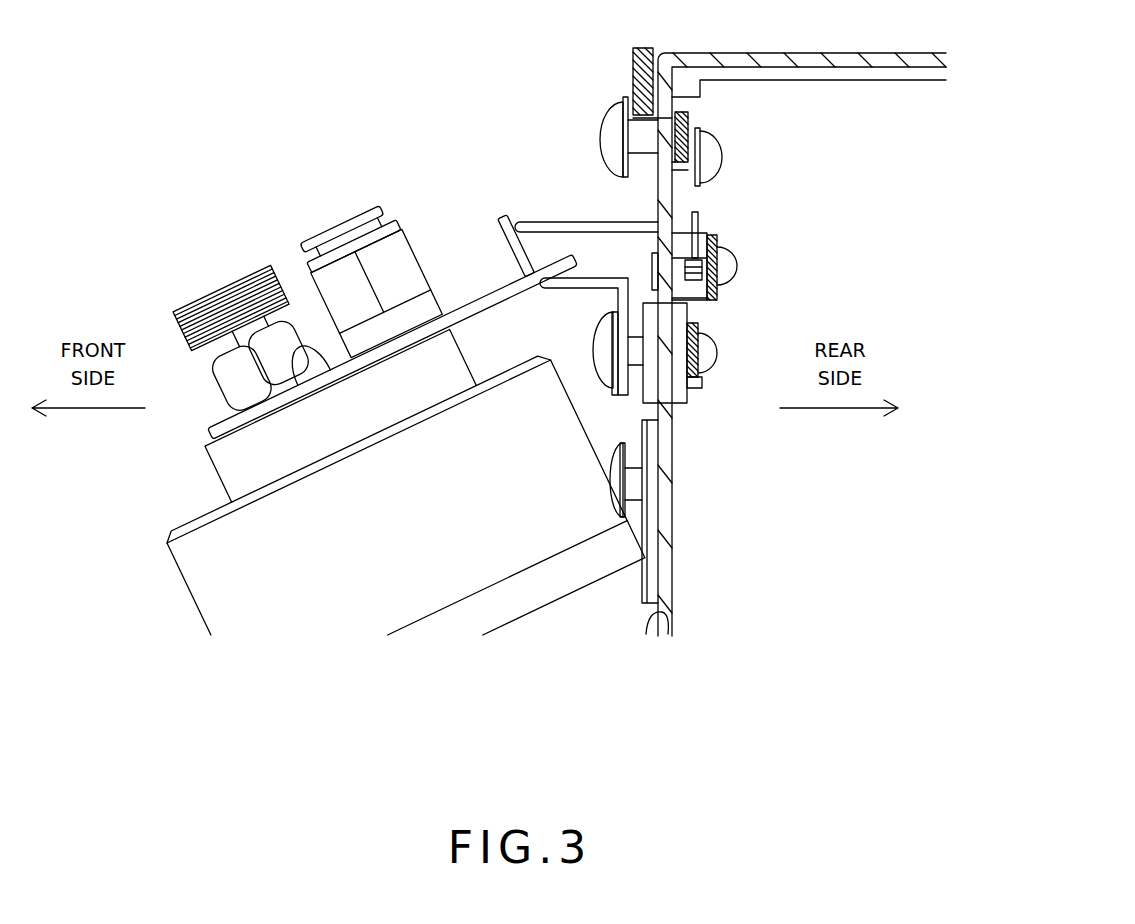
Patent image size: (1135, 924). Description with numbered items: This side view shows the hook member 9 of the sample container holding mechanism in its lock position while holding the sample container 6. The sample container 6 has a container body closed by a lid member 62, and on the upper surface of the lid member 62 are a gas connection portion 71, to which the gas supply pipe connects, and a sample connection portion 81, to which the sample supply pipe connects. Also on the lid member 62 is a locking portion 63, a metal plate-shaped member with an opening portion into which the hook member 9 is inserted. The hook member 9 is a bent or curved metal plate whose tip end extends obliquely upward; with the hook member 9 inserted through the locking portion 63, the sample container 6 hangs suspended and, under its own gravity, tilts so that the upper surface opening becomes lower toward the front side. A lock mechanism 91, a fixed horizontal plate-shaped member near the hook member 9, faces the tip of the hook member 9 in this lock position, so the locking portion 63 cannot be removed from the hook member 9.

The sample container 6 is at (280, 655).
The lid member 62 is at (186, 578).
The locking portion 63 is at (470, 303).
The gas connection portion 71 is at (315, 236).
The sample connection portion 81 is at (206, 296).
The hook member 9 is at (497, 215).
The lock mechanism 91 is at (568, 221).